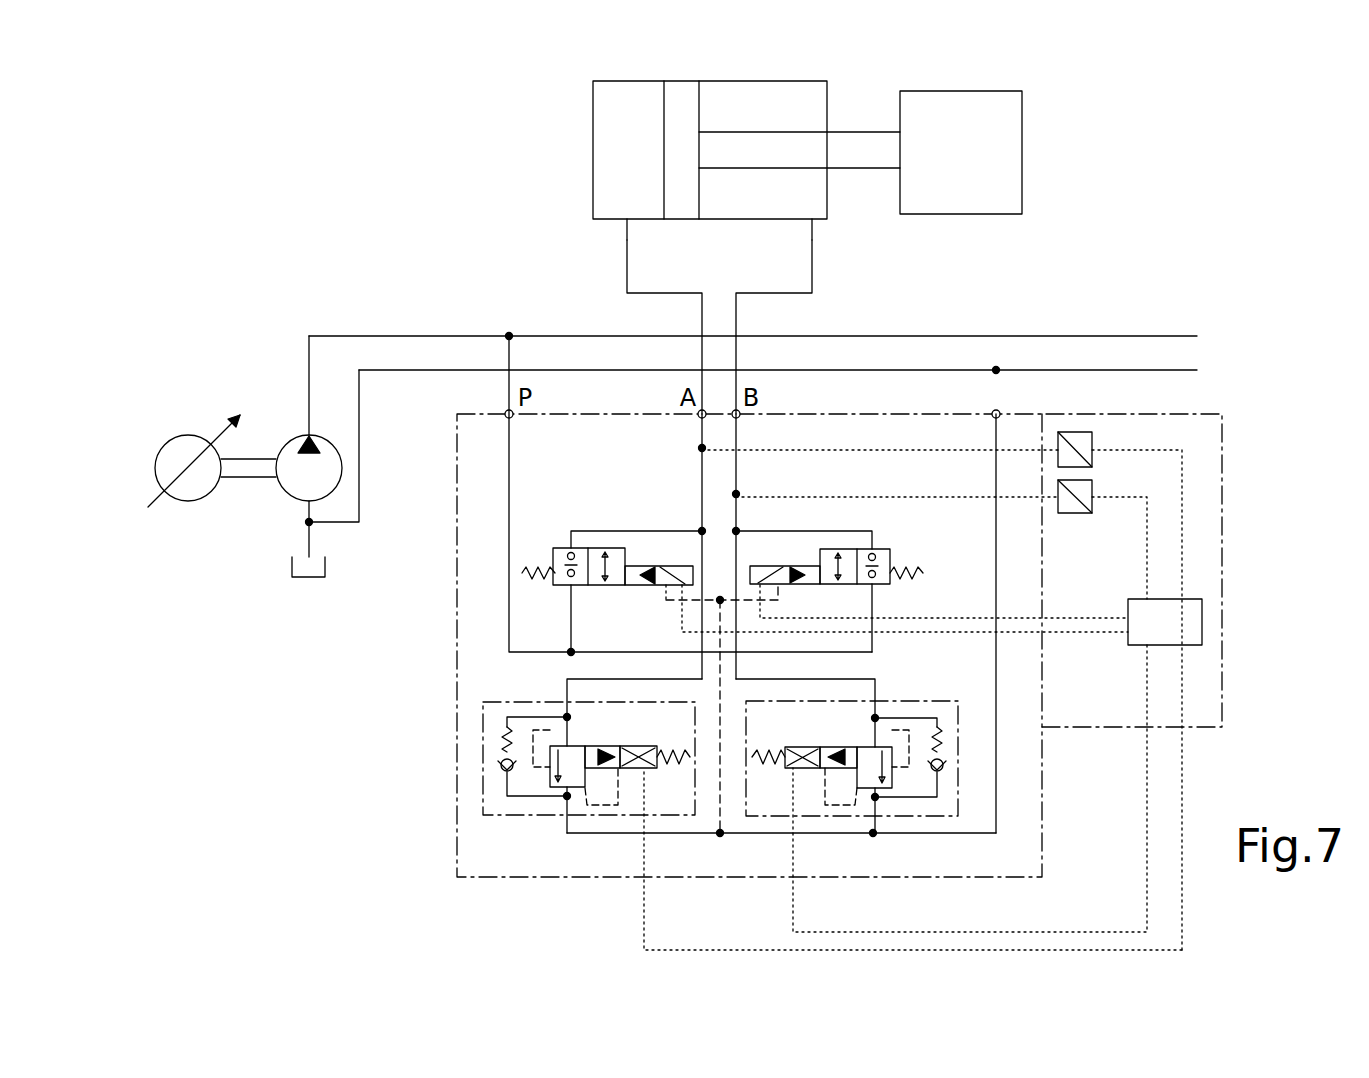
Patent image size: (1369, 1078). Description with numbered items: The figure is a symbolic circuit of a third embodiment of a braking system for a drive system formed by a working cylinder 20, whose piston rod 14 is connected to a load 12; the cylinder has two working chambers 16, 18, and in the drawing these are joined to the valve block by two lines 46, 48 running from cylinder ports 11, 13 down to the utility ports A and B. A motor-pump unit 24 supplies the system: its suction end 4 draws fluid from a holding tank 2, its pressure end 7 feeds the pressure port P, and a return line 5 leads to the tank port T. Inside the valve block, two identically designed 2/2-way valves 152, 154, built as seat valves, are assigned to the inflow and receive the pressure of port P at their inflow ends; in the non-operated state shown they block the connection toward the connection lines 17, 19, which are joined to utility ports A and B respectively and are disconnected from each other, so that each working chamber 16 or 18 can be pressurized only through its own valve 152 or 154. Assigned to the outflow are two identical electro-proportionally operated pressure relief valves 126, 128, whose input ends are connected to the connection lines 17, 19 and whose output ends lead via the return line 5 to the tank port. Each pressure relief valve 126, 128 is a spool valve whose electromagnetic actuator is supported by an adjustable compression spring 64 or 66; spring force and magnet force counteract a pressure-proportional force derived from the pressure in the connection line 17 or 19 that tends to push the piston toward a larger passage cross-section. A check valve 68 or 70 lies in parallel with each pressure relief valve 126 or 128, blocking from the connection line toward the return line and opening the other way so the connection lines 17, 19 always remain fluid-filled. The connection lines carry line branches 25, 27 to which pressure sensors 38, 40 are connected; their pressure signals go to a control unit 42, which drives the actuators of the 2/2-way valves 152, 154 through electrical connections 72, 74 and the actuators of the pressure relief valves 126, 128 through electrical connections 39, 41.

The holding tank 2 is at (312, 578).
The suction end 4 is at (308, 505).
The return line 5 is at (997, 663).
The pressure end 7 is at (309, 433).
The first cylinder port 11 is at (628, 221).
The load 12 is at (960, 215).
The second cylinder port 13 is at (808, 221).
The piston rod 14 is at (823, 145).
The working chamber 16 is at (632, 97).
The connection line 17 is at (702, 502).
The working chamber 18 is at (815, 202).
The connection line 19 is at (738, 473).
The working cylinder 20 is at (757, 81).
The motor-pump unit 24 is at (242, 487).
The line branch 25 is at (702, 447).
The line branch 27 is at (737, 495).
The pressure sensor 38 is at (1080, 445).
The electrical connection 39 is at (953, 950).
The pressure sensor 40 is at (1085, 490).
The electrical connection 41 is at (1077, 932).
The control unit 42 is at (1183, 599).
The first connecting line 46 is at (627, 267).
The second connecting line 48 is at (792, 293).
The compression spring 64 is at (683, 772).
The compression spring 66 is at (761, 778).
The check valve 68 is at (505, 745).
The check valve 70 is at (947, 738).
The electrical connection 72 is at (887, 635).
The electrical connection 74 is at (937, 620).
The pressure relief valve 126 is at (577, 747).
The pressure relief valve 128 is at (868, 746).
The 2/2-way valve 152 is at (569, 547).
The 2/2-way valve 154 is at (887, 547).